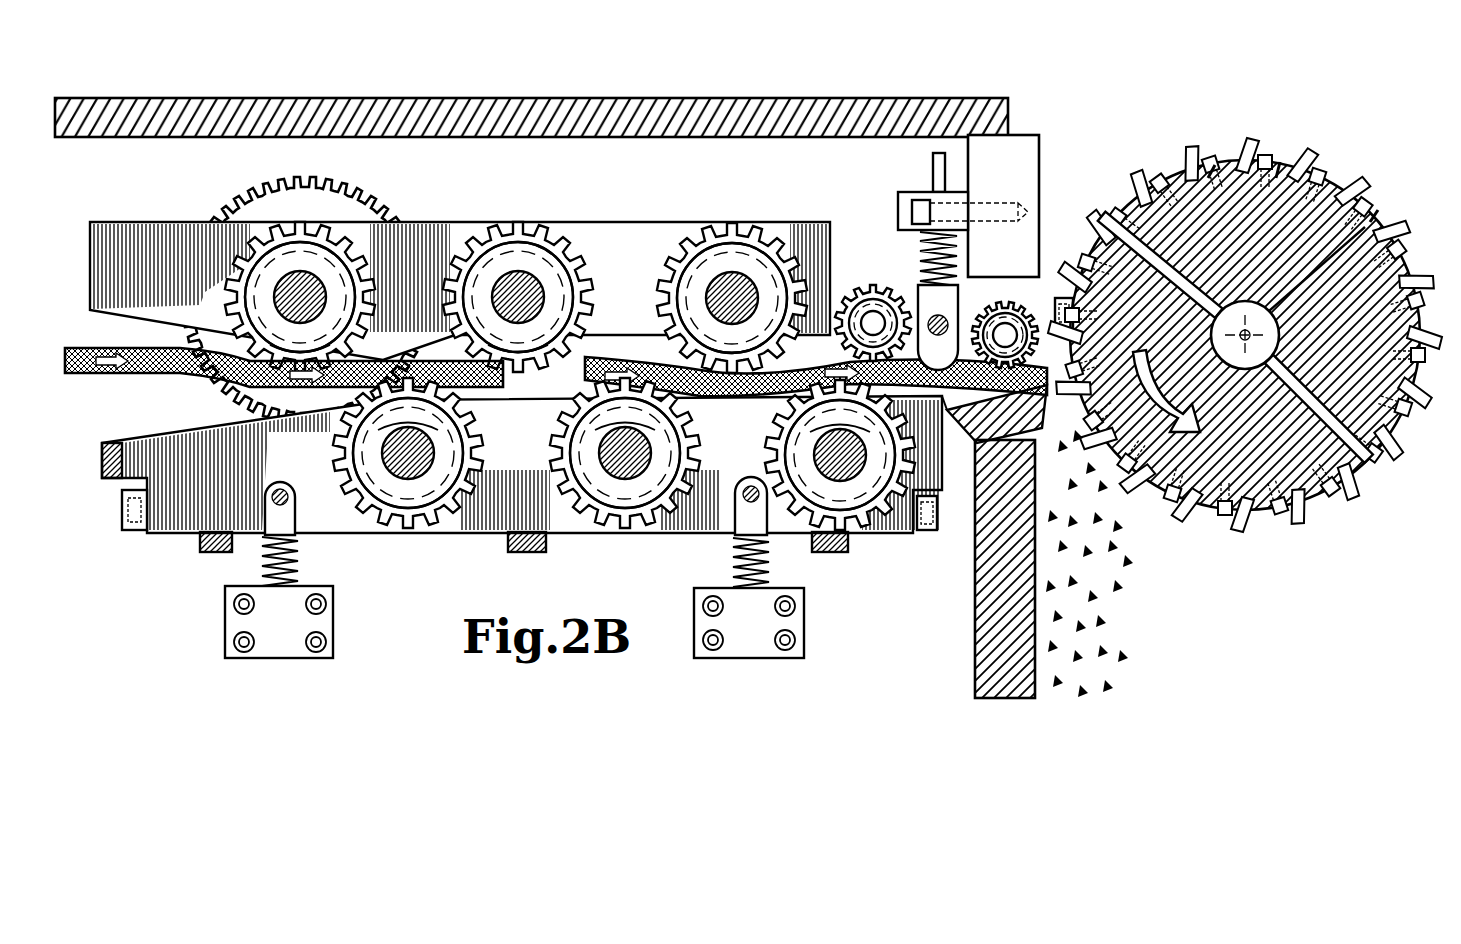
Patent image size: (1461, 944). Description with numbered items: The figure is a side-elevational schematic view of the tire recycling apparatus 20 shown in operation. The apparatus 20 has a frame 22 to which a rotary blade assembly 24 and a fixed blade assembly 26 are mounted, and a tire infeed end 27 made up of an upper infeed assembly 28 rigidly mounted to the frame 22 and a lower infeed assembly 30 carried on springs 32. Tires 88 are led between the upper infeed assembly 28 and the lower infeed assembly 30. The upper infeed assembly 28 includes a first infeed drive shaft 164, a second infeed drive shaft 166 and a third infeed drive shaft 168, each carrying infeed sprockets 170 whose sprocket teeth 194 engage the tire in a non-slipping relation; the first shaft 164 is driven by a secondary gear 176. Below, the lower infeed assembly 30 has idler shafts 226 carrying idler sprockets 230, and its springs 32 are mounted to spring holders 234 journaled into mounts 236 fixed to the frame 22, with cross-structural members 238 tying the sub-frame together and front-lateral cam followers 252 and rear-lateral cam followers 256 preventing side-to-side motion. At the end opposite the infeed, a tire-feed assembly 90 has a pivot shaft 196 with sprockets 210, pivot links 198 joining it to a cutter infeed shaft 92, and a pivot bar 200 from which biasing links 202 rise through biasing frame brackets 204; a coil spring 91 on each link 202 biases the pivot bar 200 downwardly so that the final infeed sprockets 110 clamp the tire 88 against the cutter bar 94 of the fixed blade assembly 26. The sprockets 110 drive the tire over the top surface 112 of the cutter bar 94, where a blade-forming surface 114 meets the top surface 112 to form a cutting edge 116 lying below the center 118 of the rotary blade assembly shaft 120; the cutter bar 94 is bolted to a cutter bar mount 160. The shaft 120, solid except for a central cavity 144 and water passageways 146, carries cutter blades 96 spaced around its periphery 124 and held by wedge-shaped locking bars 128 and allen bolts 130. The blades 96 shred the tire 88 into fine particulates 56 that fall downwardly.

The tire recycling apparatus 20 is at (926, 92).
The frame 22 is at (1041, 175).
The rotary blade assembly 24 is at (1420, 260).
The fixed blade assembly 26 is at (1000, 455).
The tire infeed end 27 is at (88, 290).
The upper infeed assembly 28 is at (148, 214).
The lower infeed assembly 30 is at (400, 545).
The springs 32 is at (300, 565).
The fine particulates 56 is at (1130, 600).
The tires 88 is at (68, 378).
The tire-feed assembly 90 is at (965, 305).
The coil spring 91 is at (960, 260).
The cutter infeed shaft 92 is at (1052, 301).
The cutter bar 94 is at (965, 440).
The cutter blades 96 is at (1135, 172).
The final infeed sprockets 110 is at (997, 414).
The top surface 112 is at (940, 418).
The blade-forming surface 114 is at (1132, 425).
The cutting edge 116 is at (1100, 355).
The center 118 is at (1300, 335).
The rotary blade assembly shaft 120 is at (1392, 215).
The periphery 124 is at (1250, 525).
The wedge-shaped locking bars 128 is at (1282, 160).
The allen bolts 130 is at (1212, 158).
The central cavity 144 is at (1215, 318).
The water passageways 146 is at (1228, 248).
The cutter bar mount 160 is at (972, 650).
The first infeed drive shaft 164 is at (300, 290).
The second infeed drive shaft 166 is at (540, 280).
The third infeed drive shaft 168 is at (738, 280).
The infeed sprockets 170 is at (375, 262).
The secondary gear 176 is at (230, 195).
The sprocket teeth 194 is at (430, 340).
The pivot shaft 196 is at (873, 318).
The pivot links 198 is at (936, 430).
The pivot bar 200 is at (928, 340).
The biasing links 202 is at (934, 153).
The biasing frame brackets 204 is at (906, 192).
The sprockets 210 is at (850, 292).
The idler shafts 226 is at (435, 490).
The idler sprockets 230 is at (335, 462).
The spring holders 234 is at (300, 525).
The mounts 236 is at (514, 622).
The cross-structural members 238 is at (108, 480).
The front-lateral cam followers 252 is at (135, 532).
The rear-lateral cam followers 256 is at (927, 534).